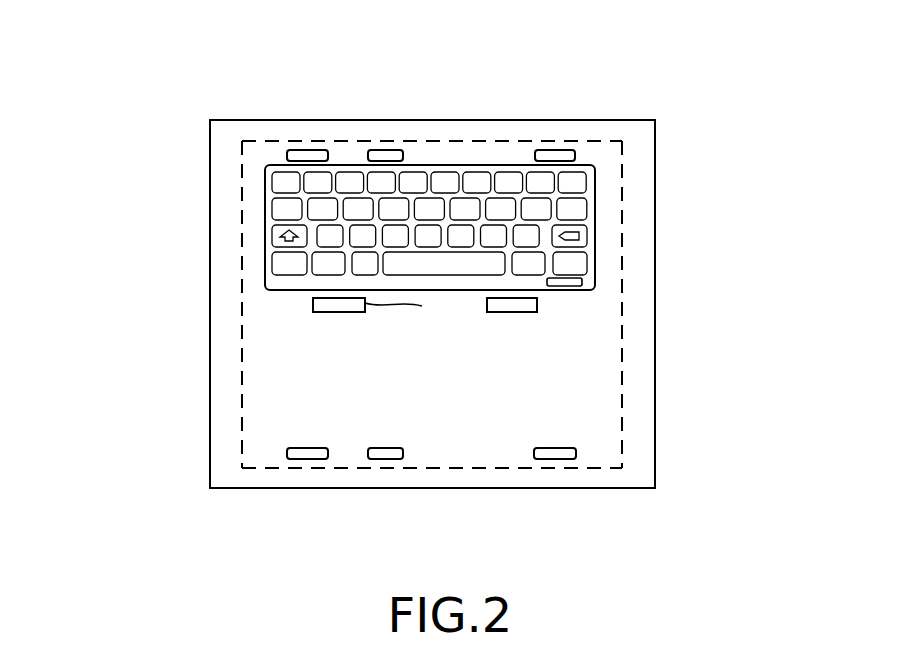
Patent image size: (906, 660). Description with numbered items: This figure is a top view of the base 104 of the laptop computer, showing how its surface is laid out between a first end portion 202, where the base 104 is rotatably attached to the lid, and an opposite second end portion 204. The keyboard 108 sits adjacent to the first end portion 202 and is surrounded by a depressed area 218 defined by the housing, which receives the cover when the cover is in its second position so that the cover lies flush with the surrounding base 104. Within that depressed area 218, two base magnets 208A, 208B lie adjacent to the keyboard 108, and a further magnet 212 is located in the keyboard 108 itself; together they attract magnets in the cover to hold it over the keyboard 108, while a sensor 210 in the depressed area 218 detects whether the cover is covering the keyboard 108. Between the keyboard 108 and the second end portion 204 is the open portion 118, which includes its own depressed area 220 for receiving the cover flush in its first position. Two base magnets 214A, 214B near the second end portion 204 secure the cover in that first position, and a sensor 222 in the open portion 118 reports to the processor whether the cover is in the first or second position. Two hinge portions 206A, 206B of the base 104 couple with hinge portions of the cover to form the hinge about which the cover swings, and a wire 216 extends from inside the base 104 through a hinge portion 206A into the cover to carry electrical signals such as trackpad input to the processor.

The base 104 is at (114, 205).
The keyboard 108 is at (597, 171).
The open portion 118 is at (404, 400).
The first end portion 202 is at (489, 116).
The second end portion 204 is at (612, 491).
The hinge portion 206A is at (313, 307).
The hinge portion 206B is at (537, 304).
The base magnet 208A is at (306, 150).
The base magnet 208B is at (558, 150).
The sensor 210 is at (379, 150).
The magnet 212 is at (585, 283).
The base magnet 214A is at (310, 460).
The base magnet 214B is at (562, 460).
The wire 216 is at (408, 307).
The depressed area 218 is at (755, 190).
The depressed area 220 is at (265, 369).
The sensor 222 is at (388, 460).